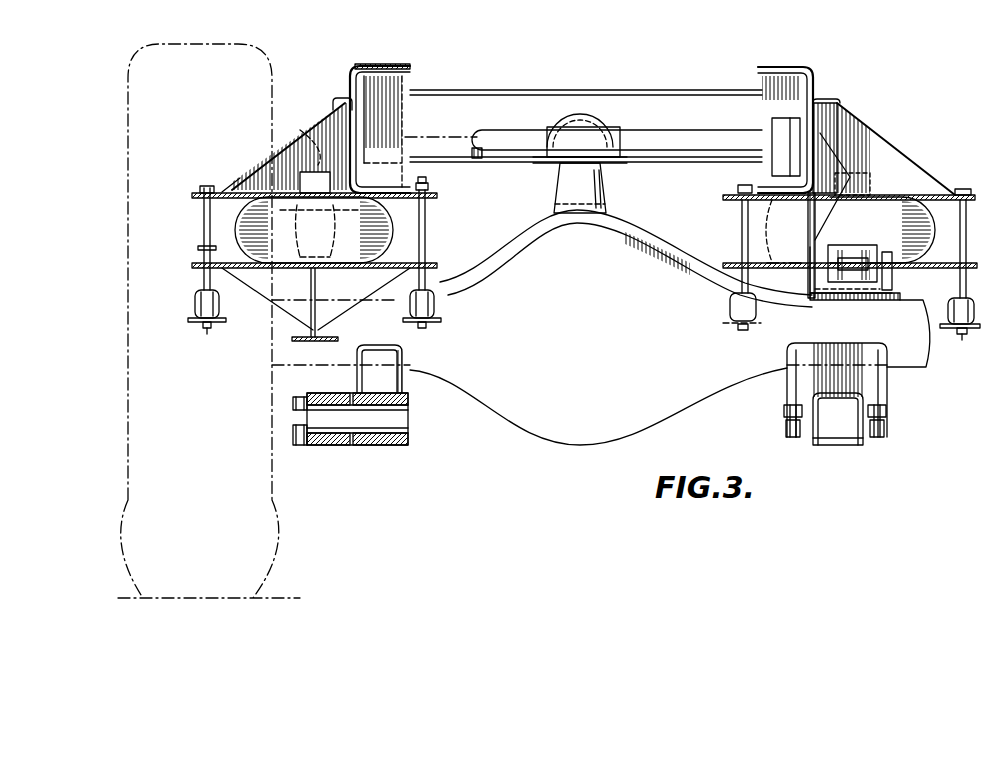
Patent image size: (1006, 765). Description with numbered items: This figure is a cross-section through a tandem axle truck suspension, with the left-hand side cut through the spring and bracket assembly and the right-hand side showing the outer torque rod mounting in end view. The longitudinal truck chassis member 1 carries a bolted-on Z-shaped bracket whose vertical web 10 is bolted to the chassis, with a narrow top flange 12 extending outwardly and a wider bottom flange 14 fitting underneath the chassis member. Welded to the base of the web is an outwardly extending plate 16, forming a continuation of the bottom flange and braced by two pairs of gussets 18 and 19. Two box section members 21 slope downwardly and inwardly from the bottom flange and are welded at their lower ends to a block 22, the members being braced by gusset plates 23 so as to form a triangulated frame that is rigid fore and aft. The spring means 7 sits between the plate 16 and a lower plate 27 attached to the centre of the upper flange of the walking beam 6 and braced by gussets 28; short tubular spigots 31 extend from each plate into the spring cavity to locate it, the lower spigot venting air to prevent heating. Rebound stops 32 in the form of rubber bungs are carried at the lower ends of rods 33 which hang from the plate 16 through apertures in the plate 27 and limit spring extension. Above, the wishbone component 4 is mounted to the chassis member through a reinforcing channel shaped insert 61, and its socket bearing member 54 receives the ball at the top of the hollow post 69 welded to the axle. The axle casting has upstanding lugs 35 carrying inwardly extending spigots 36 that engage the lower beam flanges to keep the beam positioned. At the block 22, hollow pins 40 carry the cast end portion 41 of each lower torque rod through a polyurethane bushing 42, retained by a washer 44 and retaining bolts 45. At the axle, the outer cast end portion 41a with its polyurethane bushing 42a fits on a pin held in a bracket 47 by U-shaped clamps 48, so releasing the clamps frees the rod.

The longitudinal truck chassis member 1 is at (384, 64).
The wishbone component 4 is at (692, 108).
The walking beam 6 is at (338, 336).
The spring means 7 is at (238, 228).
The vertical web 10 is at (350, 133).
The top flange 12 is at (342, 100).
The bottom flange 14 is at (416, 182).
The plate 16 is at (232, 188).
The gussets 18 is at (275, 156).
The gussets 19 is at (342, 140).
The box section members 21 is at (395, 340).
The block 22 is at (372, 446).
The gusset plates 23 is at (830, 160).
The lower plate 27 is at (204, 287).
The gussets 28 is at (268, 284).
The tubular spigots 31 is at (232, 219).
The rebound stops 32 is at (196, 318).
The rods 33 is at (210, 248).
The upstanding lugs 35 is at (893, 254).
The spigots 36 is at (878, 251).
The hollow pin 40 is at (410, 419).
The cast end portion 41 is at (330, 446).
The cast end portion 41a is at (845, 446).
The polyurethane bushing 42 is at (300, 444).
The polyurethane bushing 42a is at (815, 440).
The washer 44 is at (300, 391).
The retaining bolts 45 is at (292, 401).
The bracket 47 is at (888, 392).
The U-shaped clamps 48 is at (886, 437).
The socket bearing member 54 is at (604, 137).
The reinforcing channel shaped insert 61 is at (770, 88).
The hollow post 69 is at (606, 196).